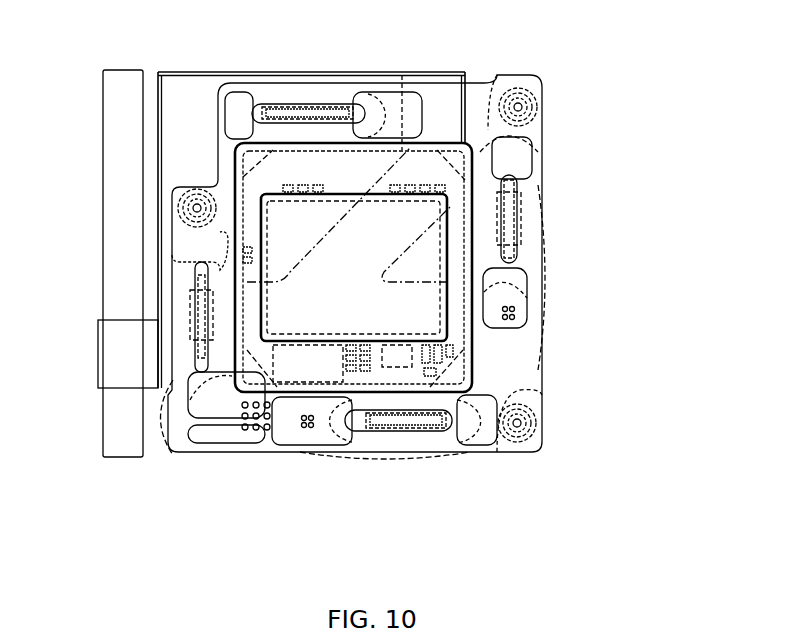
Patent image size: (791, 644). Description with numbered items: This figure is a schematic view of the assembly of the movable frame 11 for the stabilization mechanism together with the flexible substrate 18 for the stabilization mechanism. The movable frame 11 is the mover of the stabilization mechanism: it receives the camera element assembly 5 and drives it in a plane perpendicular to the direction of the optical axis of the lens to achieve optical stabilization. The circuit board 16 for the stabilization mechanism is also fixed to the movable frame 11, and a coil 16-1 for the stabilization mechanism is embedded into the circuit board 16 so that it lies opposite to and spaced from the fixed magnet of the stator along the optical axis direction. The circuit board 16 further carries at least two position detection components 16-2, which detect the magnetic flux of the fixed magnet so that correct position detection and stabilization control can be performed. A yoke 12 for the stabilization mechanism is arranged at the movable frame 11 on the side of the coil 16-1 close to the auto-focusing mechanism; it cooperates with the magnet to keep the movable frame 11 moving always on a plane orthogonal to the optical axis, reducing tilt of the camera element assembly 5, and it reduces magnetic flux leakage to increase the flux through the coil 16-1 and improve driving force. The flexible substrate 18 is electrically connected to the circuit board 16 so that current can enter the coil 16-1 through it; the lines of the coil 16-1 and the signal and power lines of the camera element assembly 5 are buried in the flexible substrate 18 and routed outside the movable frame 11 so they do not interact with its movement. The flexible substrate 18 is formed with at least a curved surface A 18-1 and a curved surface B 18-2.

The camera element assembly 5 is at (422, 252).
The movable frame for the stabilization mechanism 11 is at (478, 125).
The yoke for the stabilization mechanism 12 is at (300, 115).
The circuit board for the stabilization mechanism 16 is at (490, 366).
The coil for the stabilization mechanism 16-1 is at (518, 291).
The position detection component for the stabilization mechanism 16-2 is at (514, 320).
The flexible substrate for the stabilization mechanism 18 is at (102, 158).
The curved surface A of the flexible substrate for the stabilization mechanism 18-1 is at (292, 71).
The curved surface B of the flexible substrate for the stabilization mechanism 18-2 is at (162, 128).